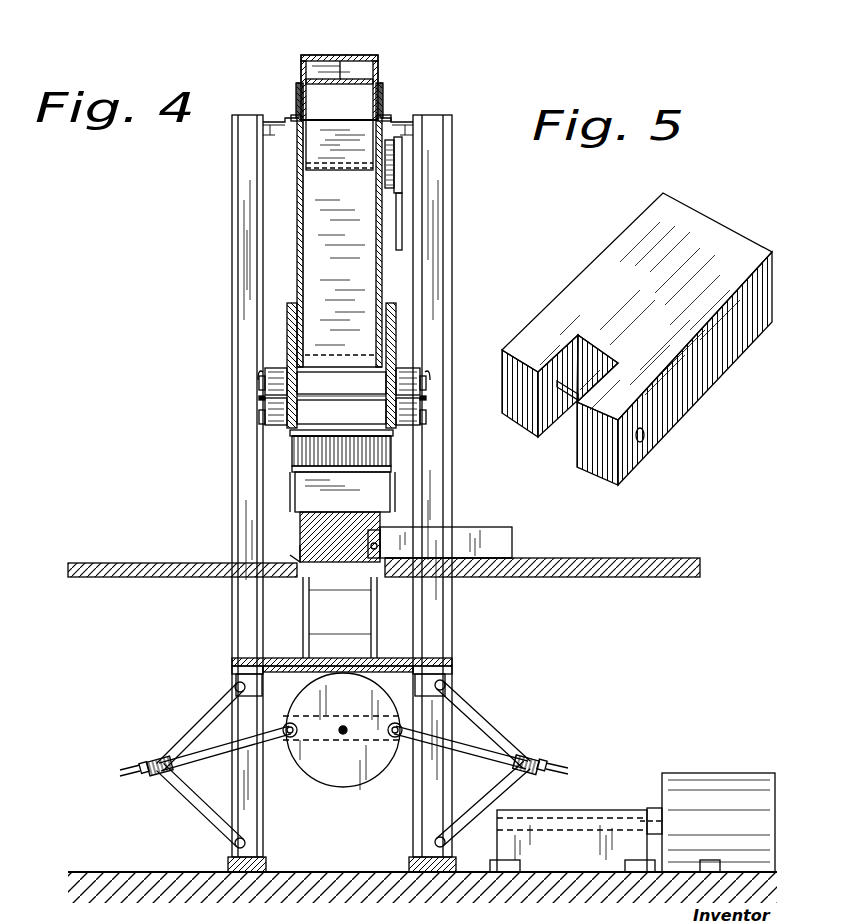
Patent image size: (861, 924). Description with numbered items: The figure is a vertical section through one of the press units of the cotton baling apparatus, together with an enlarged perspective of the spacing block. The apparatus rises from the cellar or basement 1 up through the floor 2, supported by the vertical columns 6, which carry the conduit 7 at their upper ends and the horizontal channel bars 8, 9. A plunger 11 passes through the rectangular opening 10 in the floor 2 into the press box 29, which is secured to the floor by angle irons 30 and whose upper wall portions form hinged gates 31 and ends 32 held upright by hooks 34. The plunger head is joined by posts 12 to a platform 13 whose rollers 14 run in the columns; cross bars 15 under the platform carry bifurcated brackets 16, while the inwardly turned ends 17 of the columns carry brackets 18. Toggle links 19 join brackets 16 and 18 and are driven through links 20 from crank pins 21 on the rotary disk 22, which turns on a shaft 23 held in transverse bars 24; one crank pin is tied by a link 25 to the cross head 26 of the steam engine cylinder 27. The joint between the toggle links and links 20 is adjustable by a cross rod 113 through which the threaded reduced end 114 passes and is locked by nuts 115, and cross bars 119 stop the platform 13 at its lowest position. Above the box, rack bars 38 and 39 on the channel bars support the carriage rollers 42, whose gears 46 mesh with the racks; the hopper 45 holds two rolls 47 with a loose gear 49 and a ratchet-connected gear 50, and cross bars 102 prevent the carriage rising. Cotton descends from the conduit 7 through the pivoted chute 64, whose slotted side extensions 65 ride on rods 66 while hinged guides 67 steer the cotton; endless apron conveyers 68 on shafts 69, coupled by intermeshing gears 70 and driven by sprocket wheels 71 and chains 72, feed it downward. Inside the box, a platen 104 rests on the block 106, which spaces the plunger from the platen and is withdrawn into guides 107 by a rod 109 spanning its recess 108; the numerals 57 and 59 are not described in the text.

In FIG. 4, the cellar or basement 1 is at (422, 789).
In FIG. 4, the floor 2 is at (150, 566).
In FIG. 4, the vertical columns 6 is at (240, 625).
In FIG. 4, the conduit 7 is at (350, 57).
In FIG. 4, the channel bars 8 is at (265, 382).
In FIG. 4, the channel bars 9 is at (265, 412).
In FIG. 4, the rectangular openings 10 is at (300, 578).
In FIG. 4, the plunger 11 is at (338, 565).
In FIG. 4, the posts 12 is at (372, 628).
In FIG. 4, the platform 13 is at (440, 662).
In FIG. 4, the rollers 14 is at (236, 666).
In FIG. 4, the cross bars 15 is at (236, 676).
In FIG. 4, the bifurcated brackets 16 is at (236, 688).
In FIG. 4, the inwardly turned ends 17 is at (262, 858).
In FIG. 4, the brackets 18 is at (236, 845).
In FIG. 4, the toggle links 19 is at (205, 722).
In FIG. 4, the links 20 is at (210, 755).
In FIG. 4, the crank pins 21 is at (290, 740).
In FIG. 4, the rotary disk 22 is at (330, 775).
In FIG. 4, the shaft 23 is at (345, 727).
In FIG. 4, the transverse bars 24 is at (302, 716).
In FIG. 4, the link 25 is at (650, 816).
In FIG. 4, the cross head 26 is at (535, 830).
In FIG. 4, the engine cylinder 27 is at (712, 795).
In FIG. 4, the press box 29 is at (300, 520).
In FIG. 4, the angle irons 30 is at (292, 560).
In FIG. 4, the hinged gates 31 is at (392, 436).
In FIG. 4, the ends 32 is at (292, 452).
In FIG. 4, the hooks 34 is at (292, 468).
In FIG. 4, the rack bars 38 is at (292, 440).
In FIG. 4, the rack bars 39 is at (268, 370).
In FIG. 4, the rollers 42 is at (341, 410).
In FIG. 4, the hopper 45 is at (286, 320).
In FIG. 4, the gears 46 is at (262, 418).
In FIG. 4, the rolls 47 is at (341, 383).
In FIG. 4, the loosely turning gear 49 is at (426, 380).
In FIG. 4, the gear 50 is at (260, 380).
In FIG. 4, the rod 57 is at (335, 115).
In FIG. 4, the plate 59 is at (362, 78).
In FIG. 4, the pivoted chutes 64 is at (300, 238).
In FIG. 4, the slotted side extensions 65 is at (296, 92).
In FIG. 4, the rods 66 is at (290, 118).
In FIG. 4, the hinged guides 67 is at (325, 140).
In FIG. 4, the endless apron conveyers 68 is at (325, 267).
In FIG. 4, the shafts 69 is at (305, 168).
In FIG. 4, the intermeshing gears 70 is at (392, 140).
In FIG. 4, the sprocket wheels 71 is at (402, 150).
In FIG. 4, the sprocket chains 72 is at (403, 215).
In FIG. 4, the cross bars 102 is at (262, 398).
In FIG. 4, the platen 104 is at (326, 512).
In FIG. 4, the block 106 is at (382, 540).
In FIG. 5, the block 106 is at (700, 238).
In FIG. 4, the guides 107 is at (512, 550).
In FIG. 4, the recess 108 is at (380, 538).
In FIG. 5, the recess 108 is at (555, 345).
In FIG. 4, the rod 109 is at (378, 547).
In FIG. 5, the rod 109 is at (567, 398).
In FIG. 4, the cross rod 113 is at (155, 762).
In FIG. 4, the reduced end 114 is at (138, 769).
In FIG. 4, the nuts 115 is at (142, 766).
In FIG. 4, the cross bars 119 is at (338, 670).